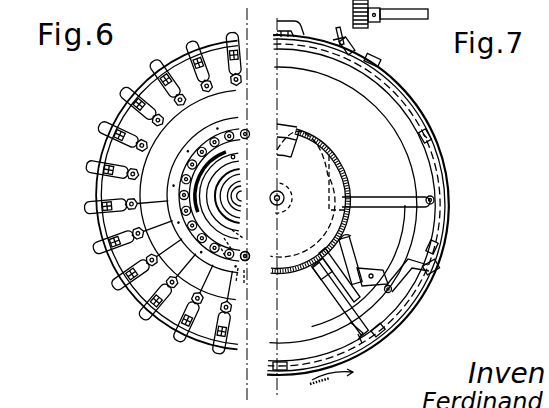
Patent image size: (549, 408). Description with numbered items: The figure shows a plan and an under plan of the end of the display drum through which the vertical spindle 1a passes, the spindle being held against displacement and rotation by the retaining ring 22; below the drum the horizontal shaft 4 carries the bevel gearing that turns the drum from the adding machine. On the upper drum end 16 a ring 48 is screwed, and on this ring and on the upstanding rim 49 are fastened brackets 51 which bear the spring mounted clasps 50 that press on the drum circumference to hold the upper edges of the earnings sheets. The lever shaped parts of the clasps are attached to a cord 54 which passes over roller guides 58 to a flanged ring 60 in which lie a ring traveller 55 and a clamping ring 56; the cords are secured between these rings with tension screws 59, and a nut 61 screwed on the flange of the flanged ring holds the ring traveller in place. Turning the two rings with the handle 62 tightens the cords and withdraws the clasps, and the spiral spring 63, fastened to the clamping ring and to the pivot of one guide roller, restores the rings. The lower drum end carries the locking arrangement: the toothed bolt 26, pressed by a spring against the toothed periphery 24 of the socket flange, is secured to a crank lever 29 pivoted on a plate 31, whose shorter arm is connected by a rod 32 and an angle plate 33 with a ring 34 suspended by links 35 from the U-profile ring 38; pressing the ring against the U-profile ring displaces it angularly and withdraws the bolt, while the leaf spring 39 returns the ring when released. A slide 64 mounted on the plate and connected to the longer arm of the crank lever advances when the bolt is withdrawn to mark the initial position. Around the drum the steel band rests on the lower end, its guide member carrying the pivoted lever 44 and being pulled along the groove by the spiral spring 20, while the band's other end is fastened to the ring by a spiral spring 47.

In FIG. 6, the vertical spindle 1a is at (246, 212).
In FIG. 7, the horizontal shaft 4 is at (400, 14).
In FIG. 6, the upper drum end 16 is at (244, 103).
In FIG. 7, the spiral spring 20 is at (277, 21).
In FIG. 6, the retaining ring 22 is at (243, 196).
In FIG. 7, the toothed periphery 24 is at (322, 166).
In FIG. 7, the toothed bolt 26 is at (349, 222).
In FIG. 7, the crank lever 29 is at (365, 266).
In FIG. 7, the plate 31 is at (372, 268).
In FIG. 7, the rod 32 is at (393, 274).
In FIG. 7, the angle plate 33 is at (435, 270).
In FIG. 7, the ring 34 is at (424, 117).
In FIG. 7, the links 35 is at (385, 61).
In FIG. 7, the ring 38 is at (388, 114).
In FIG. 7, the leaf spring 39 is at (361, 198).
In FIG. 7, the pivoted lever 44 is at (336, 28).
In FIG. 7, the spiral spring 47 is at (347, 48).
In FIG. 6, the ring 48 is at (242, 80).
In FIG. 6, the upstanding rim 49 is at (95, 256).
In FIG. 6, the spring mounted clasps 50 is at (86, 168).
In FIG. 6, the brackets 51 is at (168, 84).
In FIG. 6, the cord 54 is at (228, 312).
In FIG. 6, the ring traveller 55 is at (236, 140).
In FIG. 6, the clamping ring 56 is at (249, 262).
In FIG. 6, the roller guides 58 is at (182, 212).
In FIG. 6, the tension screws 59 is at (192, 158).
In FIG. 6, the flanged ring 60 is at (247, 280).
In FIG. 6, the nut 61 is at (240, 169).
In FIG. 6, the handle 62 is at (233, 157).
In FIG. 6, the spiral spring 63 is at (176, 181).
In FIG. 7, the slide 64 is at (347, 303).